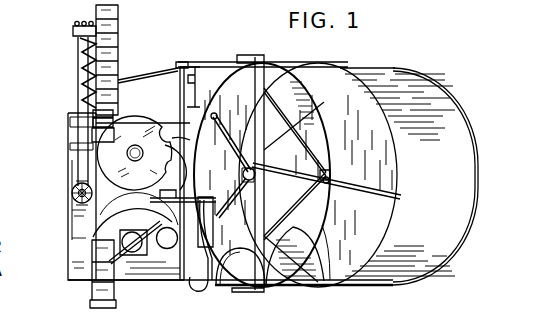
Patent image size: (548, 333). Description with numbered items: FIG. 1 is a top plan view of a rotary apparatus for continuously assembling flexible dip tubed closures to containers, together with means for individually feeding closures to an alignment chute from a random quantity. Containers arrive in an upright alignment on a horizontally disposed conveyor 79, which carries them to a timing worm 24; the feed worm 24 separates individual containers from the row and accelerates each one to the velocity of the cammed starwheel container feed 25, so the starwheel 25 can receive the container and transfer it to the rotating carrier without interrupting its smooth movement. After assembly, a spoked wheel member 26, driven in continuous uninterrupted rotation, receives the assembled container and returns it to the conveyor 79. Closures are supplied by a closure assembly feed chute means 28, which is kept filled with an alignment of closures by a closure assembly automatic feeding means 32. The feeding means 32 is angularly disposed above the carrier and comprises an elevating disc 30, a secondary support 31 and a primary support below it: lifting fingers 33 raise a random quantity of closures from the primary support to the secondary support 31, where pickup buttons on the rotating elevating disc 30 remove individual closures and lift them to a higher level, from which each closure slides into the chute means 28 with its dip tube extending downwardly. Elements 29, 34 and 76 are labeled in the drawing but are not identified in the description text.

The timing worm 24 is at (78, 65).
The cammed starwheel container feed 25 is at (157, 96).
The spoked wheel member 26 is at (121, 283).
The closure assembly feed chute means 28 is at (211, 296).
The ring 29 is at (244, 272).
The elevating disc 30 is at (221, 90).
The secondary support 31 is at (322, 228).
The closure assembly automatic feeding means 32 is at (468, 242).
The lifting fingers 33 is at (386, 192).
The loop 34 is at (284, 292).
The link rod 76 is at (153, 76).
The horizontally disposed conveyor 79 is at (92, 292).